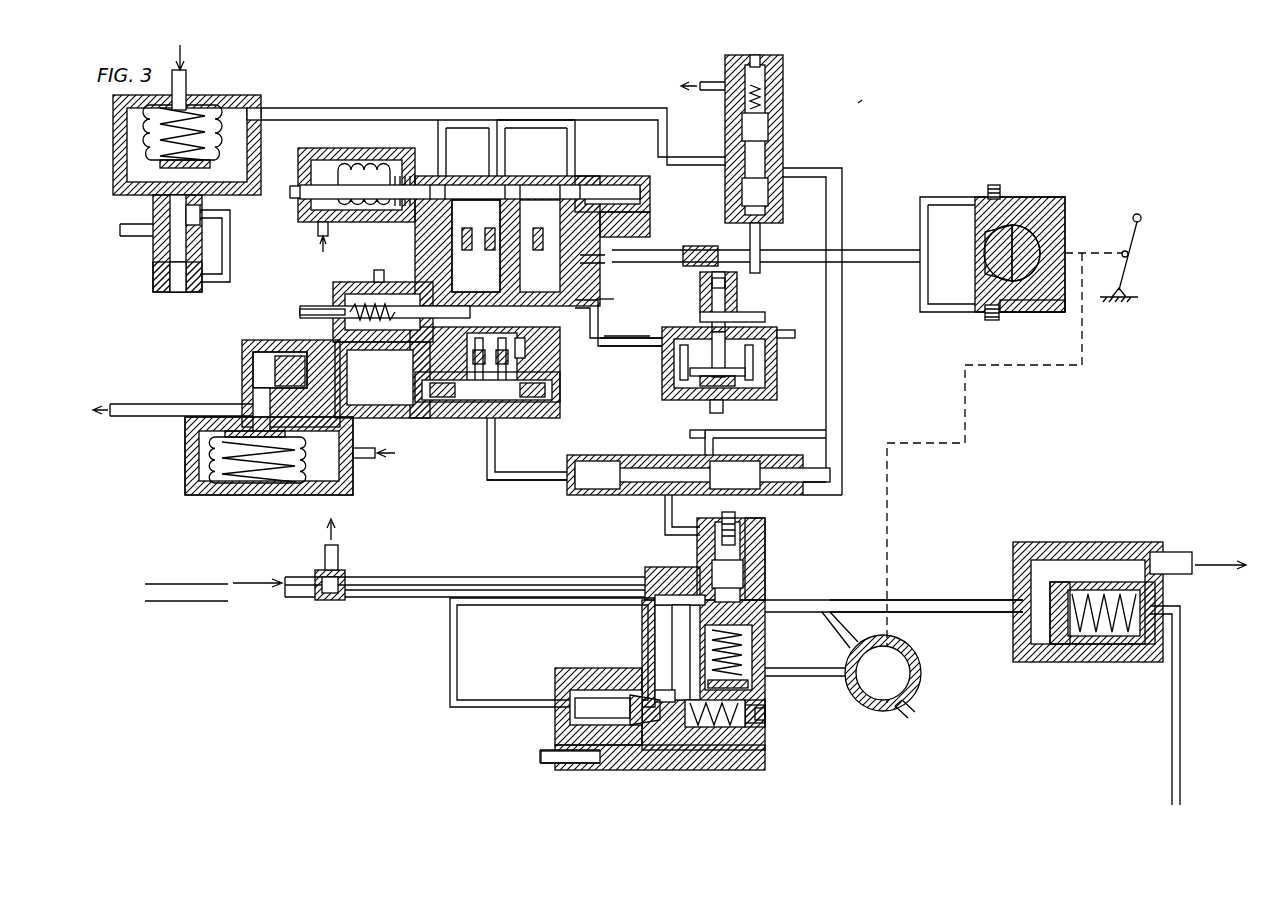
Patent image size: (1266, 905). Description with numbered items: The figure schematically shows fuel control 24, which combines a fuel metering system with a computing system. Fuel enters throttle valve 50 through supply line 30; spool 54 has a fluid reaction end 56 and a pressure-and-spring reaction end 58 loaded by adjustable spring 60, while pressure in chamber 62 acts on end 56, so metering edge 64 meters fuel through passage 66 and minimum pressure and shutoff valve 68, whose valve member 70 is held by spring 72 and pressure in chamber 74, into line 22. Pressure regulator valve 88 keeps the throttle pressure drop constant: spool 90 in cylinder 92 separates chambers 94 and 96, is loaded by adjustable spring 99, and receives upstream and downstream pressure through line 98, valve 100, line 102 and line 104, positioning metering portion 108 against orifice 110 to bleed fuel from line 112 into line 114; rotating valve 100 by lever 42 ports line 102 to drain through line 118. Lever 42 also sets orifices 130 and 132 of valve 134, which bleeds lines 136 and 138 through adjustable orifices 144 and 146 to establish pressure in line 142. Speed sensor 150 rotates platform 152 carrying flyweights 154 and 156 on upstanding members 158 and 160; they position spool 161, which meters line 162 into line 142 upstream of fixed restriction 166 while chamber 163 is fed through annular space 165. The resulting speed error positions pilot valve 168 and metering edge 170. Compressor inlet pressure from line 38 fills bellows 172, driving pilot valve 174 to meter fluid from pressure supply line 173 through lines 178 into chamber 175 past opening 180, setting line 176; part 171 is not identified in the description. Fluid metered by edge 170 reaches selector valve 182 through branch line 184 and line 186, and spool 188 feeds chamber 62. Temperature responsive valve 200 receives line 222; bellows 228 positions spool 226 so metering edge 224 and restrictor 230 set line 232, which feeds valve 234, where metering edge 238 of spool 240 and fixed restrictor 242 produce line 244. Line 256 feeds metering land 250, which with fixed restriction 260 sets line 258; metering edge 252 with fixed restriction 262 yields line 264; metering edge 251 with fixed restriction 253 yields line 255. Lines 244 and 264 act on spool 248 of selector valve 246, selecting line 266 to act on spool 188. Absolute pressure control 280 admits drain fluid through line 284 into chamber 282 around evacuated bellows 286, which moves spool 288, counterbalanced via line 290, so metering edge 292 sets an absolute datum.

The line 22 is at (1190, 557).
The fuel control 24 is at (863, 109).
The inlet or supply line 30 is at (478, 577).
The line 38 is at (188, 88).
The lever 42 is at (1130, 250).
The throttle valve 50 is at (775, 557).
The spool 54 is at (765, 545).
The fluid reaction end 56 is at (700, 558).
The combined pressure and spring reaction end 58 is at (752, 640).
The adjustable spring 60 is at (752, 668).
The chamber 62 is at (736, 528).
The metering edge 64 is at (778, 603).
The passage 66 is at (843, 607).
The minimum pressure and shutoff valve 68 is at (1085, 671).
The valve member 70 is at (1062, 648).
The spring 72 is at (1163, 590).
The chamber 74 is at (1137, 646).
The pressure regulator valve 88 is at (762, 700).
The spool 90 is at (765, 752).
The cylinder 92 is at (748, 728).
The chamber 94 is at (775, 711).
The chamber 96 is at (600, 695).
The line 98 is at (828, 622).
The adjustable spring 99 is at (766, 724).
The valve 100 is at (890, 655).
The line 102 is at (790, 678).
The line 104 is at (457, 628).
The metering portion 108 is at (662, 690).
The orifice 110 is at (765, 770).
The line 112 is at (660, 600).
The line 114 is at (560, 765).
The line 118 is at (915, 690).
The orifice 130 is at (1065, 218).
The orifice 132 is at (1010, 278).
The valve 134 is at (1042, 242).
The line 136 is at (985, 312).
The line 138 is at (977, 200).
The line 142 is at (660, 250).
The adjustable orifice 144 is at (1005, 315).
The adjustable orifice 146 is at (999, 178).
The speed sensor 150 is at (788, 355).
The platform 152 is at (723, 406).
The flyweight 154 is at (757, 370).
The flyweight 156 is at (690, 372).
The upstanding member 158 is at (700, 382).
The upstanding member 160 is at (753, 380).
The spool 161 is at (662, 345).
The line 162 is at (742, 315).
The chamber 163 is at (737, 283).
The annular space 165 is at (737, 300).
The fixed restriction 166 is at (701, 246).
The pilot valve 168 is at (768, 200).
The metering edge 170 is at (783, 175).
The bellows housing 171 is at (246, 100).
The bellows 172 is at (222, 132).
The pressure supply line 173 is at (142, 238).
The pilot valve 174 is at (153, 272).
The chamber 175 is at (256, 116).
The line 176 is at (340, 110).
The line 178 is at (222, 222).
The opening 180 is at (190, 213).
The selector valve 182 is at (806, 488).
The branch line 184 is at (830, 434).
The line 186 is at (662, 520).
The spool 188 is at (640, 492).
The temperature responsive valve 200 is at (560, 176).
The line 222 is at (467, 148).
The metering edge 224 is at (332, 232).
The spool 226 is at (364, 184).
The bellows 228 is at (368, 162).
The restrictor 230 is at (384, 276).
The line 232 is at (414, 232).
The valve 234 is at (333, 290).
The metering edge 238 is at (476, 248).
The spool 240 is at (586, 312).
The fixed restrictor 242 is at (485, 372).
The line 244 is at (420, 392).
The selector valve 246 is at (422, 398).
The spool 248 is at (485, 430).
The metering land 250 is at (540, 148).
The metering edge 251 is at (590, 186).
The metering land 252 is at (535, 262).
The fixed restriction 253 is at (605, 216).
The line 255 is at (582, 264).
The line 256 is at (498, 128).
The line 258 is at (470, 192).
The fixed restriction 260 is at (477, 253).
The fixed restriction 262 is at (520, 352).
The line 264 is at (650, 342).
The line 266 is at (480, 483).
The absolute pressure control 280 is at (365, 498).
The chamber 282 is at (420, 395).
The line 284 is at (372, 460).
The bellows 286 is at (300, 496).
The spool 288 is at (258, 368).
The line 290 is at (312, 348).
The metering edge 292 is at (255, 402).